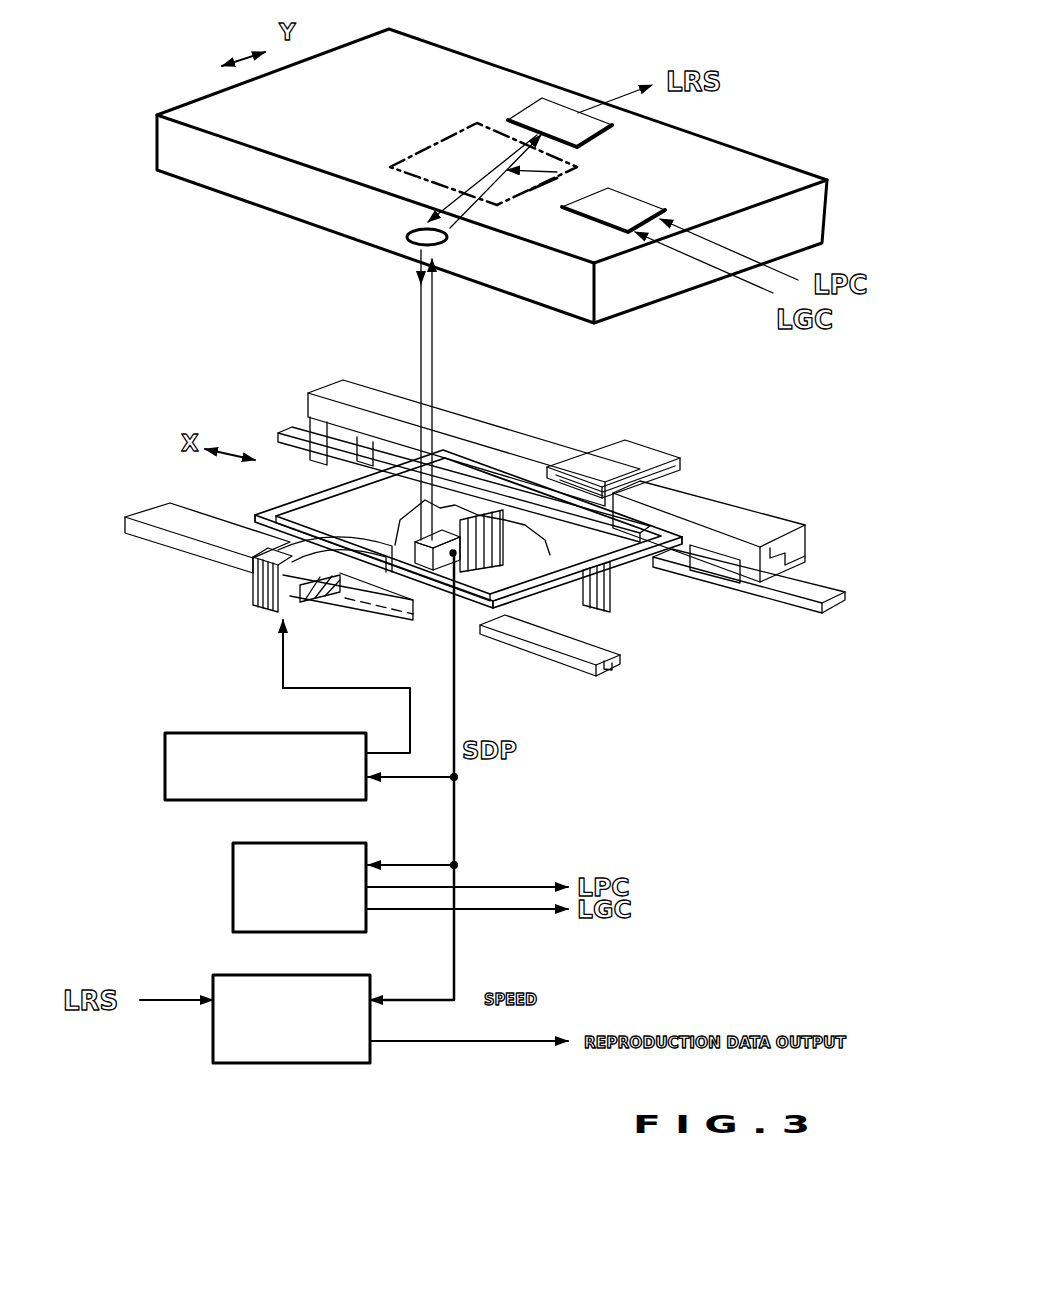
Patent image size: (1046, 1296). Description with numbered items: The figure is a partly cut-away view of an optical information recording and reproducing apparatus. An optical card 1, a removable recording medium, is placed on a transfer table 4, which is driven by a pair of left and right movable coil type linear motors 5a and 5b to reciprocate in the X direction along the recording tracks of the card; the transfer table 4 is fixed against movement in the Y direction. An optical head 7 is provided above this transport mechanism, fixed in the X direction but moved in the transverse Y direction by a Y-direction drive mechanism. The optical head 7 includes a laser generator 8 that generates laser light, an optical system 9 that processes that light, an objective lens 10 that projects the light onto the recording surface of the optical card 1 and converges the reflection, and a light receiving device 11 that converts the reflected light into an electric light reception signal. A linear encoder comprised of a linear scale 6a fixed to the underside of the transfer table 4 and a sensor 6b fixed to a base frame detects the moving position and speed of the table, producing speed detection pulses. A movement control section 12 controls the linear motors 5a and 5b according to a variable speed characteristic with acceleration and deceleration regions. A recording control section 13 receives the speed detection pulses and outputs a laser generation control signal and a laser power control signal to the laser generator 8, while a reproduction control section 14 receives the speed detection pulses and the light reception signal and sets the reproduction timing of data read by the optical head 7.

The optical card 1 is at (598, 550).
The transfer table 4 is at (248, 517).
The linear motor 5a is at (660, 456).
The linear motor 5b is at (253, 598).
The linear scale 6a is at (612, 590).
The sensor 6b is at (432, 553).
The optical head 7 is at (440, 44).
The laser generator 8 is at (640, 205).
The optical system 9 is at (402, 160).
The objective lens 10 is at (413, 240).
The light receiving device 11 is at (520, 103).
The movement control section 12 is at (286, 733).
The recording control section 13 is at (286, 843).
The reproduction control section 14 is at (304, 975).